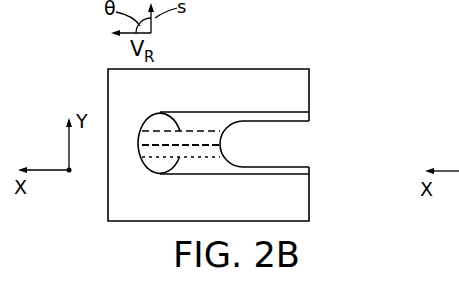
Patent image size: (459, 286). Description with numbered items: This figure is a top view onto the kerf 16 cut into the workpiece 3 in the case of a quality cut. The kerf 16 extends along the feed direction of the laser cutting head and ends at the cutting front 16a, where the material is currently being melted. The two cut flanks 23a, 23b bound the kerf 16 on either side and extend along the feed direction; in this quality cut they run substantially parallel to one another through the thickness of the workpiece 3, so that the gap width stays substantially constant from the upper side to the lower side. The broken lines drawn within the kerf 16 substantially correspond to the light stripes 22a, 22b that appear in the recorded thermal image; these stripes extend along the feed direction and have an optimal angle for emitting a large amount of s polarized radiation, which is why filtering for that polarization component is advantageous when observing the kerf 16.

The workpiece 3 is at (273, 88).
The kerf 16 is at (293, 143).
The cutting front 16a is at (208, 145).
The light stripe 22a is at (160, 113).
The light stripe 22b is at (160, 173).
The cut flank 23a is at (258, 113).
The cut flank 23b is at (258, 176).